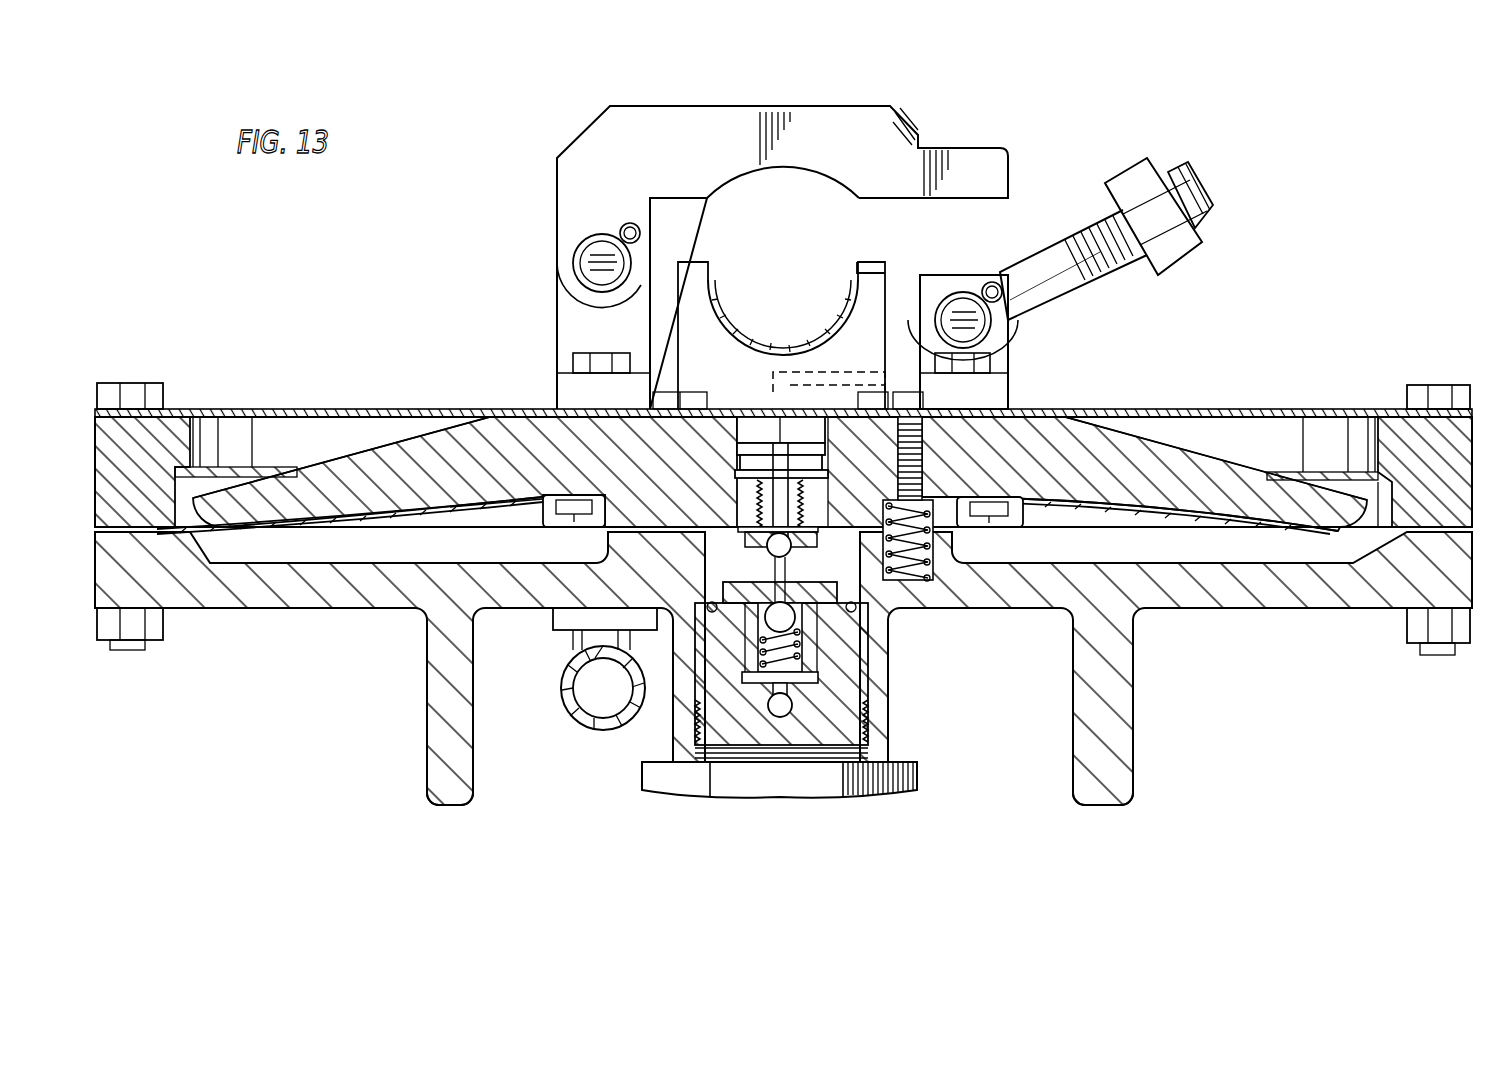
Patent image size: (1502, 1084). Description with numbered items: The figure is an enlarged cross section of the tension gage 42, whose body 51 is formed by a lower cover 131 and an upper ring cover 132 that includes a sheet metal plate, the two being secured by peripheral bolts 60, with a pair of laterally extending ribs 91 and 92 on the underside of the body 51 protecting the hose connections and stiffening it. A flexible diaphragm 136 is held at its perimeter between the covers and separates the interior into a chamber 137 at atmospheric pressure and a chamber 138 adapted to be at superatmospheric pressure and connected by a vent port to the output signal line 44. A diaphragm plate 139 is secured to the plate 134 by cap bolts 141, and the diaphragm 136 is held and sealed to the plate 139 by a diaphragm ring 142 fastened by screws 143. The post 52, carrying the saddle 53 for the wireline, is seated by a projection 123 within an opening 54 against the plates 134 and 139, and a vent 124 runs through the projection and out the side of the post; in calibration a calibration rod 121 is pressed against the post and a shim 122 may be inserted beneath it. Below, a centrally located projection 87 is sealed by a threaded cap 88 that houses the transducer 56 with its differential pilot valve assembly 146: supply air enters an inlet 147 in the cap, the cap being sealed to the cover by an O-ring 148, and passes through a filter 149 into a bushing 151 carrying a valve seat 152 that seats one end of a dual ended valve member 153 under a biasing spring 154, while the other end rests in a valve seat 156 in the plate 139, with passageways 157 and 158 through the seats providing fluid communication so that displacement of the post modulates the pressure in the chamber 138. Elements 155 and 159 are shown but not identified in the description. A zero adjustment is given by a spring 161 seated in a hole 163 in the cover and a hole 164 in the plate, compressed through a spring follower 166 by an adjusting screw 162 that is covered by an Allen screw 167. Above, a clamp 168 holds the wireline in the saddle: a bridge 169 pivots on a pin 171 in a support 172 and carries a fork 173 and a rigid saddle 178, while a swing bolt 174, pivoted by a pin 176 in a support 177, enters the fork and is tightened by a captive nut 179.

The tension gage 42 is at (314, 624).
The output signal line 44 is at (565, 668).
The body 51 is at (1410, 433).
The post 52 is at (695, 272).
The saddle 53 is at (740, 323).
The opening 54 is at (743, 415).
The transducer 56 is at (691, 800).
The peripheral bolts 60 is at (128, 384).
The projection 87 is at (900, 760).
The threaded cap 88 is at (880, 794).
The rib 91 is at (1133, 745).
The rib 92 is at (427, 768).
The calibration rod 121 is at (818, 478).
The shim 122 is at (737, 450).
The projection 123 is at (813, 432).
The vent 124 is at (838, 375).
The lower cover 131 is at (183, 587).
The upper ring cover 132 is at (170, 438).
The plate 134 is at (1252, 412).
The flexible diaphragm 136 is at (1105, 510).
The chamber 137 is at (289, 451).
The chamber 138 is at (367, 556).
The diaphragm plate 139 is at (1143, 450).
The cap bolts 141 is at (660, 386).
The diaphragm ring 142 is at (555, 512).
The screws 143 is at (543, 525).
The differential pilot valve assembly 146 is at (746, 632).
The inlet 147 is at (792, 708).
The O-ring 148 is at (868, 668).
The filter 149 is at (838, 680).
The bushing 151 is at (803, 605).
The valve seat 152 is at (862, 640).
The dual ended valve member 153 is at (766, 553).
The biasing spring 154 is at (773, 660).
The valve seat 155 is at (743, 577).
The valve seat 156 is at (753, 525).
The passageway 157 is at (782, 518).
The passageway 158 is at (853, 600).
The plug 159 is at (608, 528).
The spring 161 is at (970, 497).
The adjusting screw 162 is at (1000, 400).
The hole 163 is at (923, 558).
The hole 164 is at (952, 540).
The spring follower 166 is at (945, 476).
The Allen screw 167 is at (925, 408).
The clamp 168 is at (665, 124).
The bridge 169 is at (790, 105).
The pin 171 is at (587, 247).
The support 172 is at (563, 302).
The fork 173 is at (983, 157).
The swing bolt 174 is at (1097, 272).
The pin 176 is at (948, 307).
The support 177 is at (997, 333).
The rigid saddle 178 is at (813, 173).
The captive nut 179 is at (1192, 252).